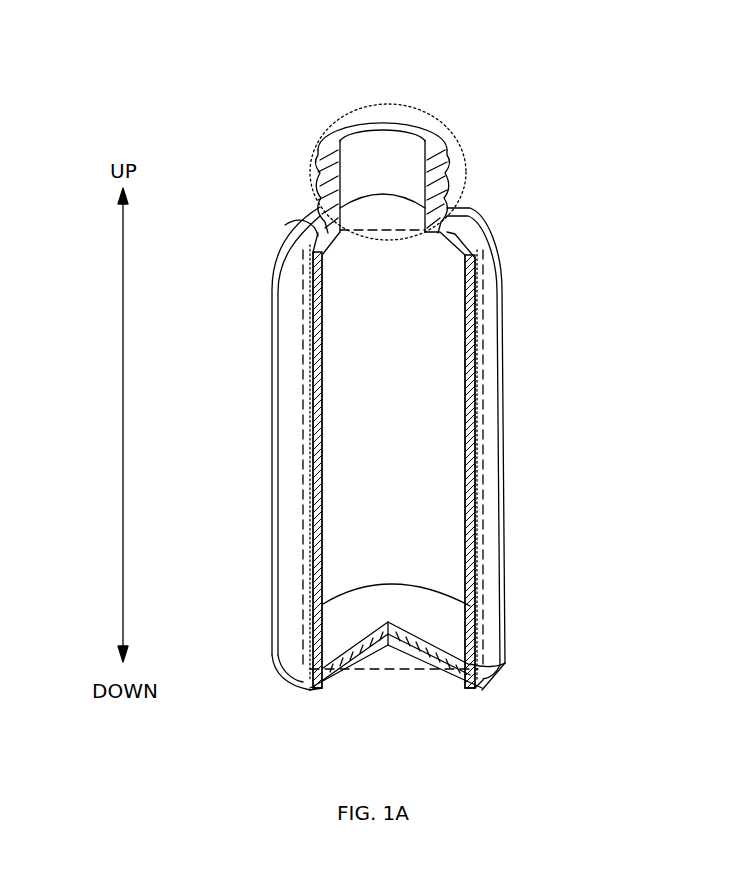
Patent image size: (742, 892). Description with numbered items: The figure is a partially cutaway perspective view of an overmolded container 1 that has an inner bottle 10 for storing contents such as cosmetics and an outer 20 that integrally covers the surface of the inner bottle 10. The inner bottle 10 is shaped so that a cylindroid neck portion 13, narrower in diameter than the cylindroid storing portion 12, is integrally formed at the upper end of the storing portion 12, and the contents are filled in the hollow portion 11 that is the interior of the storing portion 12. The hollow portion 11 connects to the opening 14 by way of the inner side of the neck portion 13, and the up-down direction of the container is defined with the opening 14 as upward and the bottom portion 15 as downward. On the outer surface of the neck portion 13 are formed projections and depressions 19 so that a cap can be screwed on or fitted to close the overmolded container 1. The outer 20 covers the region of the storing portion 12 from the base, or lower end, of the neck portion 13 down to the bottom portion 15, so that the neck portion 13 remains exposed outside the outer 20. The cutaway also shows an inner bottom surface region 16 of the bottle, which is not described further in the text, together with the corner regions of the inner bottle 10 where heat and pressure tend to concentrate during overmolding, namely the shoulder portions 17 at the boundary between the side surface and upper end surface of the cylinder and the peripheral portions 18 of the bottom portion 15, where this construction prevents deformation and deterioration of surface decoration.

The overmolded container 1 is at (510, 105).
The inner bottle 10 is at (470, 338).
The hollow portion 11 is at (401, 486).
The storing portion 12 is at (398, 675).
The neck portion 13 is at (463, 185).
The opening 14 is at (385, 145).
The bottom portion 15 is at (423, 668).
The inner bottom surface 16 is at (407, 603).
The shoulder portions 17 is at (303, 255).
The peripheral portions of the bottom portion 18 is at (317, 691).
The projections and depressions 19 is at (323, 163).
The outer 20 is at (495, 430).